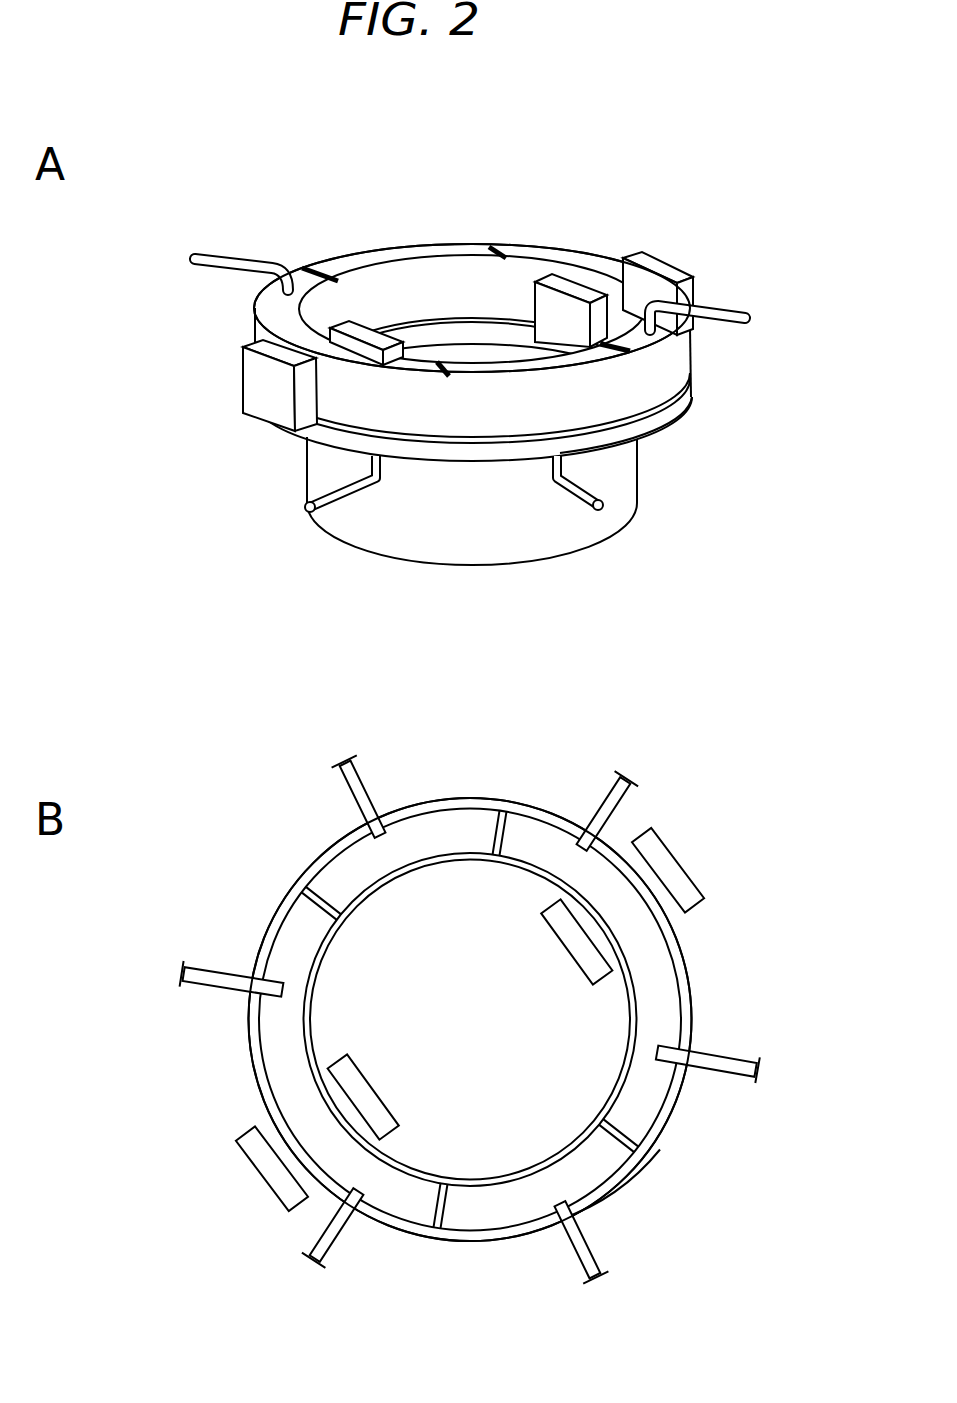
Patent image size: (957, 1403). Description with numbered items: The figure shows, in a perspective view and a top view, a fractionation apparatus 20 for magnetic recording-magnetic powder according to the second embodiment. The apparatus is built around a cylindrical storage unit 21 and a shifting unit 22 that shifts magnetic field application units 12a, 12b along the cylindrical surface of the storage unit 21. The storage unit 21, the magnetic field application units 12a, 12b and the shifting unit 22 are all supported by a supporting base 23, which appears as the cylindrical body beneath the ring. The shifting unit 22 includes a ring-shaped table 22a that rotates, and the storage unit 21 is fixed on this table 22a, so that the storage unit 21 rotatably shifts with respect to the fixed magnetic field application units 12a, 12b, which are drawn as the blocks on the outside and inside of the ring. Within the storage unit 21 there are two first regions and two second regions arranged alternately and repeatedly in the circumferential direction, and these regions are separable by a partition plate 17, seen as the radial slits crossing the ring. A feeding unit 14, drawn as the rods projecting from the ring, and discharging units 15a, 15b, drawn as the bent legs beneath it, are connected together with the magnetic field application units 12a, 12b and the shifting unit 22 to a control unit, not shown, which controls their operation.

The fractionation apparatus 20 is at (594, 136).
The storage unit 21 is at (668, 373).
The shifting unit 22 is at (682, 423).
The ring-shaped table 22a is at (648, 430).
The supporting base 23 is at (434, 548).
The partition plate 17 is at (327, 268).
The magnetic field application unit 12a is at (665, 262).
The magnetic field application unit 12b is at (355, 328).
The feeding unit 14 is at (207, 254).
The discharging unit 15a is at (346, 510).
The discharging unit 15b is at (580, 508).